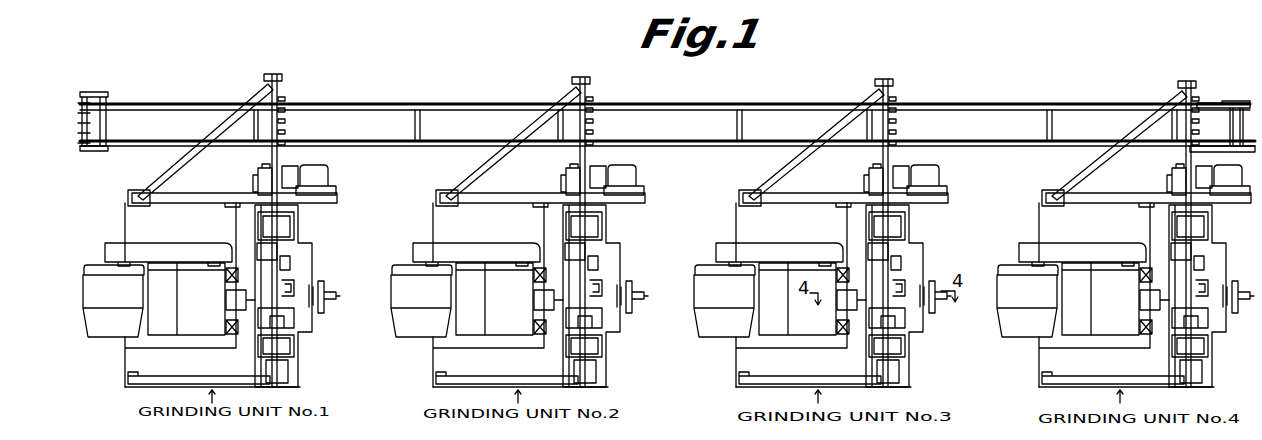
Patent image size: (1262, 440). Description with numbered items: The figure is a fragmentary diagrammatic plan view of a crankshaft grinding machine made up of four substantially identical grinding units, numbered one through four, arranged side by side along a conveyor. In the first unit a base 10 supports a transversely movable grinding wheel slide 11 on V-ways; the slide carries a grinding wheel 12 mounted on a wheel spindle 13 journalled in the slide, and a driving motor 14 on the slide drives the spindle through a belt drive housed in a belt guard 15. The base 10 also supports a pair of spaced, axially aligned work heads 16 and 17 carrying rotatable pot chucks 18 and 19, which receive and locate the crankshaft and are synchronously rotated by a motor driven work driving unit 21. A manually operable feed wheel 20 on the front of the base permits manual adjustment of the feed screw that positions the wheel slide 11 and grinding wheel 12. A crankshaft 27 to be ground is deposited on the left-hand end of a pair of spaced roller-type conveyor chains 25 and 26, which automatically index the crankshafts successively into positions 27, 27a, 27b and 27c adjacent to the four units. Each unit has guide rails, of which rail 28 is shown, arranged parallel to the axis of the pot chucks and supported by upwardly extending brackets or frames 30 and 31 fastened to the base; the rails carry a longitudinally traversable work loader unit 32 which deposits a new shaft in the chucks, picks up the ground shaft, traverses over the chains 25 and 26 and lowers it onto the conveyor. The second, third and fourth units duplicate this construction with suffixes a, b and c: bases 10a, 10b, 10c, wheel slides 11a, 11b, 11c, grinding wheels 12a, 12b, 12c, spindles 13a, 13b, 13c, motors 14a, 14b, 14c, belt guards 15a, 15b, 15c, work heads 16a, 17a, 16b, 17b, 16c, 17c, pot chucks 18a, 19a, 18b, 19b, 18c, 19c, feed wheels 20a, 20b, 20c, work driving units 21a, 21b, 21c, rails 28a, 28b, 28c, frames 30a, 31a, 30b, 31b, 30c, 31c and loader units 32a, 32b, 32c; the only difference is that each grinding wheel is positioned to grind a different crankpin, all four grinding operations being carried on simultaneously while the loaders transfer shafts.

The base 10 is at (144, 390).
The grinding wheel slide 11 is at (157, 328).
The grinding wheel 12 is at (252, 315).
The wheel spindle 13 is at (223, 243).
The driving motor 14 is at (109, 318).
The belt guard 15 is at (112, 243).
The work head 16 is at (290, 352).
The work head 17 is at (288, 239).
The pot chuck 18 is at (288, 322).
The pot chuck 19 is at (290, 266).
The feed wheel 20 is at (326, 309).
The work driving unit 21 is at (334, 176).
The conveyor chain 25 is at (395, 104).
The conveyor chain 26 is at (397, 148).
The crankshaft 27 is at (89, 89).
The guide rail 28 is at (270, 160).
The bracket or frame 30 is at (213, 198).
The bracket or frame 31 is at (190, 379).
The work loader unit 32 is at (300, 283).
The base 10a is at (500, 395).
The grinding wheel slide 11a is at (465, 313).
The grinding wheel 12a is at (531, 321).
The wheel spindle 13a is at (488, 295).
The driving motor 14a is at (410, 308).
The belt guard 15a is at (458, 242).
The work head 16a is at (611, 358).
The work head 17a is at (605, 226).
The pot chuck 18a is at (611, 330).
The pot chuck 19a is at (611, 257).
The feed wheel 20a is at (643, 302).
The work driving unit 21a is at (617, 179).
The crankshaft 27a is at (618, 121).
The guide rail 28a is at (560, 232).
The bracket or frame 30a is at (540, 147).
The bracket or frame 31a is at (507, 388).
The work loader unit 32a is at (627, 309).
The base 10b is at (804, 396).
The grinding wheel slide 11b is at (769, 316).
The grinding wheel 12b is at (843, 321).
The wheel spindle 13b is at (791, 295).
The driving motor 14b is at (715, 308).
The belt guard 15b is at (765, 242).
The work head 16b is at (910, 358).
The work head 17b is at (909, 228).
The pot chuck 18b is at (909, 334).
The pot chuck 19b is at (913, 256).
The feed wheel 20b is at (945, 304).
The work driving unit 21b is at (919, 179).
The crankshaft 27b is at (915, 121).
The guide rail 28b is at (867, 233).
The bracket or frame 30b is at (843, 148).
The bracket or frame 31b is at (810, 389).
The work loader unit 32b is at (927, 311).
The base 10c is at (1107, 395).
The grinding wheel slide 11c is at (1069, 316).
The grinding wheel 12c is at (1143, 301).
The wheel spindle 13c is at (1094, 295).
The driving motor 14c is at (1016, 310).
The belt guard 15c is at (1064, 242).
The work head 16c is at (1210, 360).
The work head 17c is at (1214, 231).
The pot chuck 18c is at (1210, 337).
The pot chuck 19c is at (1213, 262).
The feed wheel 20c is at (1239, 313).
The work driving unit 21c is at (1208, 179).
The crankshaft 27c is at (1212, 121).
The guide rail 28c is at (1173, 234).
The bracket or frame 30c is at (1146, 149).
The bracket or frame 31c is at (1113, 370).
The work loader unit 32c is at (1162, 328).